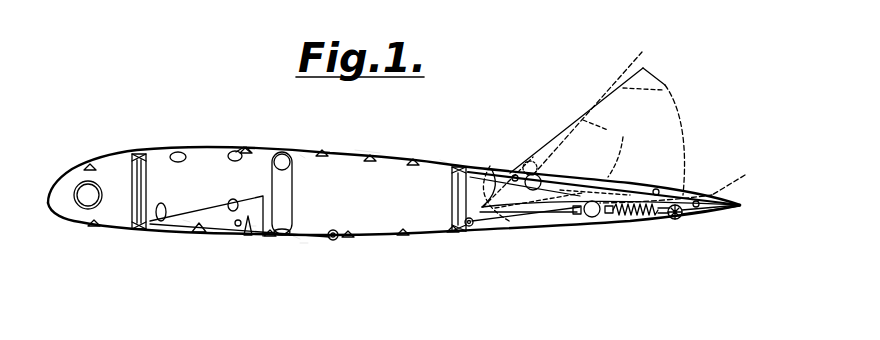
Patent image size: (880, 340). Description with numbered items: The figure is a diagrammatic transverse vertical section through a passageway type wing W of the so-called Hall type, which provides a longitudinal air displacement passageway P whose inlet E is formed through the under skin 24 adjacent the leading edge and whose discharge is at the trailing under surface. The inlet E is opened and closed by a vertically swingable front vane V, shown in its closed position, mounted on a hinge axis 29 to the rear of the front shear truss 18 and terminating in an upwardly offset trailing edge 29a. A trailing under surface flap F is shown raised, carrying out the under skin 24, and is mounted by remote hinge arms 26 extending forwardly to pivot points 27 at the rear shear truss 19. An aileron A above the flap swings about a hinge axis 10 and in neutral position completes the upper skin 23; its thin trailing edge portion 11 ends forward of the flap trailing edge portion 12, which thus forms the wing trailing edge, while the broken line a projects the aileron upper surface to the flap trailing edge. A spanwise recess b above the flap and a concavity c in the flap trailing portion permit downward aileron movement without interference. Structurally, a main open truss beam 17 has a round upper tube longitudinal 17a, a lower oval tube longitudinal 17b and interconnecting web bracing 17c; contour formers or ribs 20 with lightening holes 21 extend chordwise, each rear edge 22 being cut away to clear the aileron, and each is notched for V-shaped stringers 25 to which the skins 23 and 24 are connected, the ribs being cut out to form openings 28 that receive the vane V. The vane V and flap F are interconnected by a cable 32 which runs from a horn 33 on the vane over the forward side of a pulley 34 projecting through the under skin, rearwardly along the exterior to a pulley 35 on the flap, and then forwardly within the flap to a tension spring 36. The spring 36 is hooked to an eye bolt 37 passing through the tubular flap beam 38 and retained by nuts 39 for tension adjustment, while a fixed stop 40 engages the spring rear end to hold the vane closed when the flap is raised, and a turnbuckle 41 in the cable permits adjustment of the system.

The hinge axis 10 is at (520, 178).
The trailing edge portion of the aileron 11 is at (675, 188).
The trailing edge portion of the wing flap 12 is at (725, 207).
The main open truss beam 17 is at (306, 156).
The round tube upper longitudinal 17a is at (272, 156).
The lower oval tube longitudinal 17b is at (297, 238).
The interconnecting web bracing 17c is at (240, 148).
The front open vertical shear truss 18 is at (148, 173).
The rear open vertical shear truss 19 is at (438, 160).
The contour formers or sheet metal ribs 20 is at (384, 172).
The lightening holes 21 is at (74, 183).
The rear end or edge of rib 22 is at (447, 212).
The upper skin or covering 23 is at (190, 153).
The lower skin or covering 24 is at (300, 238).
The stringers 25 is at (222, 155).
The remote hinge arms 26 is at (492, 230).
The hinge or pivot points 27 is at (469, 227).
The upwardly extending openings 28 is at (233, 199).
The hinge axis of the vane 29 is at (161, 222).
The upwardly offset trailing edge of the vane 29a is at (252, 227).
The cable 32 is at (330, 230).
The crank arm or horn 33 is at (240, 236).
The pulley 34 is at (337, 240).
The pulley on wing flap 35 is at (680, 219).
The tension spring 36 is at (636, 216).
The eye bolt 37 is at (590, 218).
The longitudinal tubular beam of the wing flap 38 is at (583, 218).
The nuts 39 is at (580, 220).
The fixed stop 40 is at (665, 217).
The turnbuckle 41 is at (460, 225).
The wing W is at (356, 150).
The aileron A is at (582, 178).
The longitudinal air displacement passageway P is at (334, 181).
The front vane V is at (183, 220).
The inlet or intake opening E is at (244, 228).
The trailing under surface wing flap F is at (562, 220).
The broken line projection of aileron upper surface a is at (680, 181).
The spanwise recess or depressed portion b is at (658, 189).
The concavity or recess c is at (697, 208).